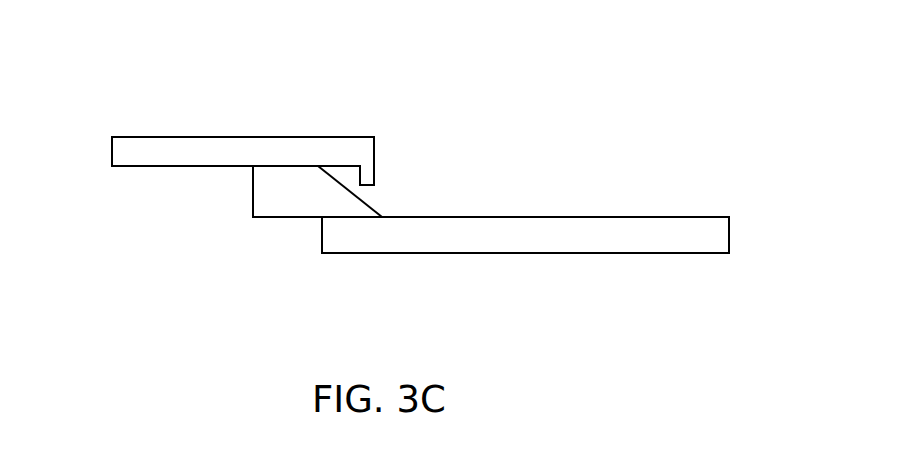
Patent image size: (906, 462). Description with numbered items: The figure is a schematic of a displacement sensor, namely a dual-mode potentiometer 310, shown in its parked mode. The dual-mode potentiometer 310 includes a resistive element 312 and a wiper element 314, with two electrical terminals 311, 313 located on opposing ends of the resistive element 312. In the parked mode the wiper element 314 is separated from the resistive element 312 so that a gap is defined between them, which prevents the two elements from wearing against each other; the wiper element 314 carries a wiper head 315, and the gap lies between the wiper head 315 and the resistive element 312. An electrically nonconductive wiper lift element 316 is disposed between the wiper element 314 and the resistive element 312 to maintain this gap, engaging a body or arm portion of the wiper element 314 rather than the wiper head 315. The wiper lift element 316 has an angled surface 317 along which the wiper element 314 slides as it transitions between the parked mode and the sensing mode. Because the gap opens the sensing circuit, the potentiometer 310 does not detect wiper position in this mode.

The dual-mode potentiometer 310 is at (123, 55).
The electrical terminal 311 is at (322, 240).
The resistive element 312 is at (497, 238).
The electrical terminal 313 is at (729, 240).
The wiper element 314 is at (216, 152).
The wiper head 315 is at (366, 173).
The electrically nonconductive wiper lift element 316 is at (273, 203).
The angled surface 317 is at (374, 205).